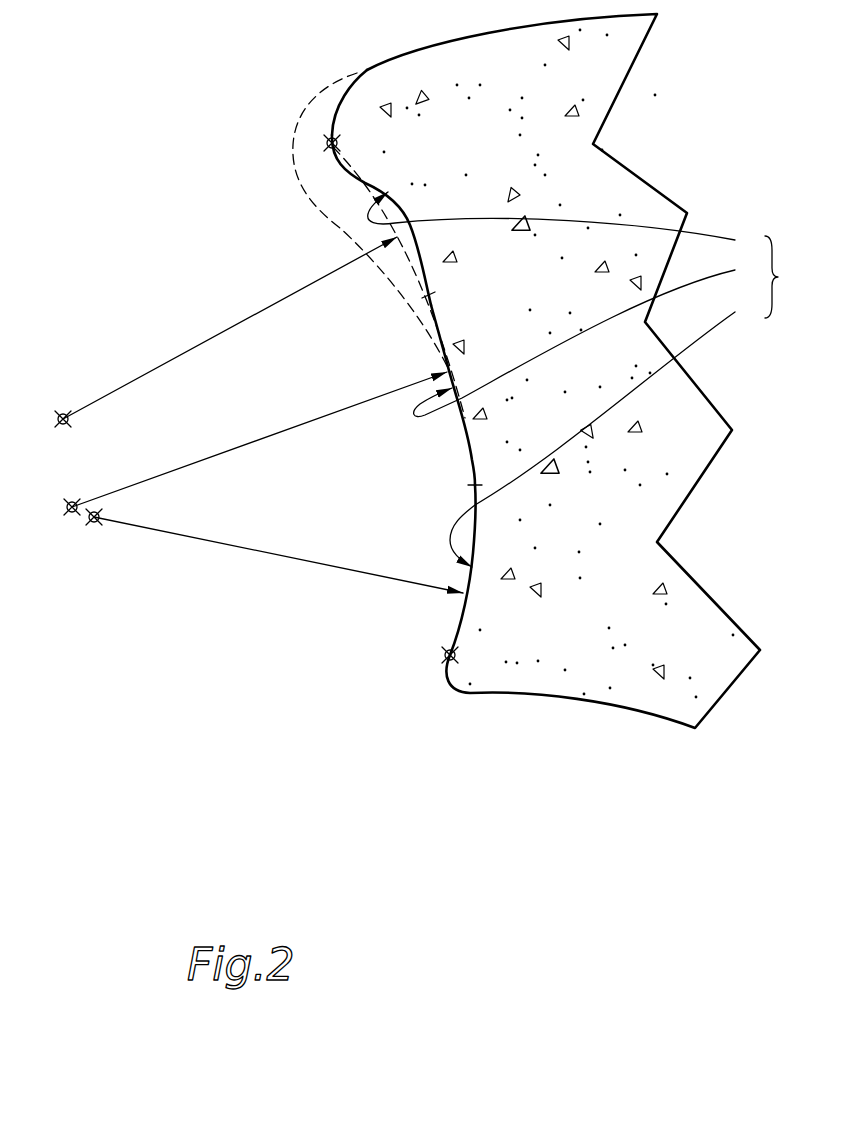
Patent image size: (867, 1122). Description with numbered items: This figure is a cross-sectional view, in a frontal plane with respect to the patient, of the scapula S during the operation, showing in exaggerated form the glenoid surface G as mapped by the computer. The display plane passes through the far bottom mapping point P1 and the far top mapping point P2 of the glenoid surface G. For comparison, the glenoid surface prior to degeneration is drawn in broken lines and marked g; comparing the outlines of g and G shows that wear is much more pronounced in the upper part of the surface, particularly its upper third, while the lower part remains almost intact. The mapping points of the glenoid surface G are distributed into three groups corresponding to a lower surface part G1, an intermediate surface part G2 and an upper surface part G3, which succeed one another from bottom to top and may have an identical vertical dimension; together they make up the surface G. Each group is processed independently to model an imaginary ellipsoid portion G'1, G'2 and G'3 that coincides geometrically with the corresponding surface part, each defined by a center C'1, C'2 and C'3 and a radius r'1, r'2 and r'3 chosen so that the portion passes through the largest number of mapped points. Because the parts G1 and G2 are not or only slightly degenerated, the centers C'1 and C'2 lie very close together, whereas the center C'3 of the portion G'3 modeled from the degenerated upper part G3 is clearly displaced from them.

The scapula S is at (563, 371).
The glenoid surface prior to degeneration g is at (310, 110).
The far bottom mapping point P1 is at (438, 663).
The far top mapping point P2 is at (333, 117).
The ellipsoid portion G'1 is at (440, 570).
The ellipsoid portion G'2 is at (430, 395).
The ellipsoid portion G'3 is at (351, 220).
The center of ellipsoid portion C'1 is at (98, 535).
The center of ellipsoid portion C'2 is at (58, 509).
The center of ellipsoid portion C'3 is at (49, 421).
The radius of ellipsoid portion r'1 is at (278, 555).
The radius of ellipsoid portion r'2 is at (259, 439).
The radius of ellipsoid portion r'3 is at (230, 328).
The lower surface part G1 is at (606, 429).
The intermediate surface part G2 is at (588, 339).
The upper surface part G3 is at (565, 225).
The glenoid surface G is at (780, 277).